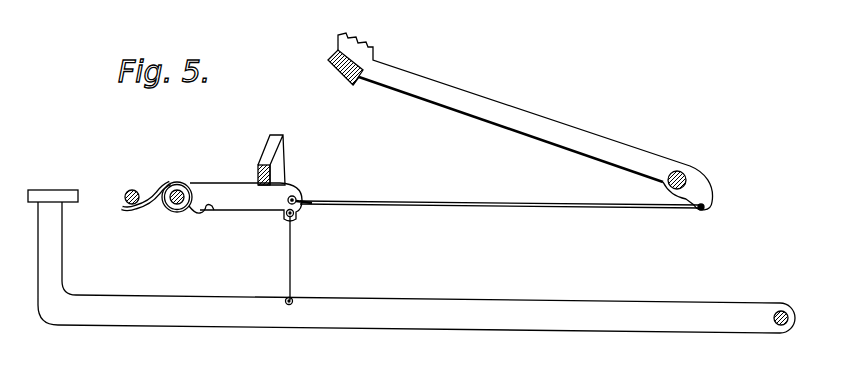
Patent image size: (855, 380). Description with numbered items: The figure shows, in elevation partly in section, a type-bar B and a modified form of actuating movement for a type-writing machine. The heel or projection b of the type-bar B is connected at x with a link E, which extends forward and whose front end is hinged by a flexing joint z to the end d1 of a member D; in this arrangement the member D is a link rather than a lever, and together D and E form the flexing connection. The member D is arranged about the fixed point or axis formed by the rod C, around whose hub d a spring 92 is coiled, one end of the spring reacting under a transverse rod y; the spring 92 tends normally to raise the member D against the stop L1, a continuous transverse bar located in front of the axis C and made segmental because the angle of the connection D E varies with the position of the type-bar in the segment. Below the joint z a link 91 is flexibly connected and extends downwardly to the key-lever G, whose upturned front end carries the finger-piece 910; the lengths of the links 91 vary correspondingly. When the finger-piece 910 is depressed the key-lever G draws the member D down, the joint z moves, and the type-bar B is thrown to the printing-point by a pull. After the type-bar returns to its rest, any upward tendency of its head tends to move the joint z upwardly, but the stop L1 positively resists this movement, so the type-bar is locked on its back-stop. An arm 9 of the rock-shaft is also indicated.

The key-lever G is at (437, 302).
The finger-piece 910 is at (62, 184).
The rearwardly-projecting arm 9 is at (781, 310).
The link 91 is at (285, 258).
The member D is at (246, 202).
The end of member D d1 is at (298, 194).
The joint z is at (300, 206).
The rod C is at (192, 208).
The spring 92 is at (182, 170).
The transverse rod y is at (129, 190).
The hub d is at (160, 206).
The stop L1 is at (258, 146).
The type-bar B is at (520, 121).
The heel of type-bar b is at (692, 188).
The connection point x is at (703, 211).
The link E is at (413, 200).